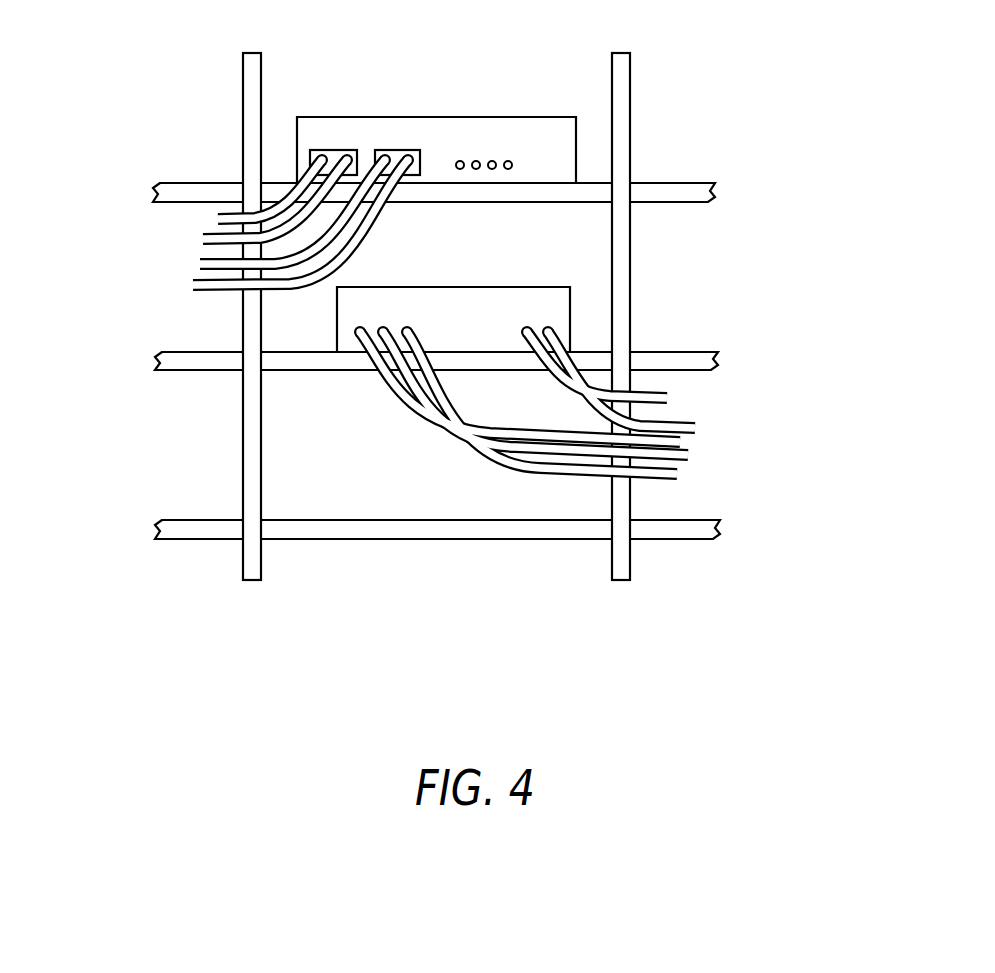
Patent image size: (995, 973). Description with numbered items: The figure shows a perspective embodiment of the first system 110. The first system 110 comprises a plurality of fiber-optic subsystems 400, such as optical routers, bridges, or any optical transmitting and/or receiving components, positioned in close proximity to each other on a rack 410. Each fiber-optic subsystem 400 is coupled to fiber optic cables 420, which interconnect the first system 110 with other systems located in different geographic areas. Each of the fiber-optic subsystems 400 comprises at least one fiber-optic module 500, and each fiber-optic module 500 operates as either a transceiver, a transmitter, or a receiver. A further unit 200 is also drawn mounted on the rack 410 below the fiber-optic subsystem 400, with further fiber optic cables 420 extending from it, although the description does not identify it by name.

The first system 110 is at (712, 102).
The server / second electronic unit 200 is at (523, 287).
The fiber-optic subsystem 400 is at (510, 118).
The rack 410 is at (631, 560).
The fiber optic cables 420 is at (183, 234).
The fiber-optic module 500 is at (397, 149).